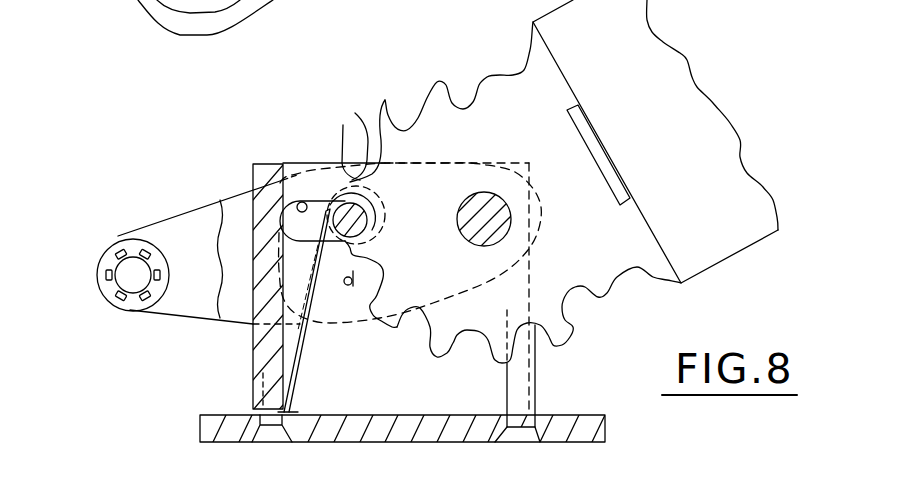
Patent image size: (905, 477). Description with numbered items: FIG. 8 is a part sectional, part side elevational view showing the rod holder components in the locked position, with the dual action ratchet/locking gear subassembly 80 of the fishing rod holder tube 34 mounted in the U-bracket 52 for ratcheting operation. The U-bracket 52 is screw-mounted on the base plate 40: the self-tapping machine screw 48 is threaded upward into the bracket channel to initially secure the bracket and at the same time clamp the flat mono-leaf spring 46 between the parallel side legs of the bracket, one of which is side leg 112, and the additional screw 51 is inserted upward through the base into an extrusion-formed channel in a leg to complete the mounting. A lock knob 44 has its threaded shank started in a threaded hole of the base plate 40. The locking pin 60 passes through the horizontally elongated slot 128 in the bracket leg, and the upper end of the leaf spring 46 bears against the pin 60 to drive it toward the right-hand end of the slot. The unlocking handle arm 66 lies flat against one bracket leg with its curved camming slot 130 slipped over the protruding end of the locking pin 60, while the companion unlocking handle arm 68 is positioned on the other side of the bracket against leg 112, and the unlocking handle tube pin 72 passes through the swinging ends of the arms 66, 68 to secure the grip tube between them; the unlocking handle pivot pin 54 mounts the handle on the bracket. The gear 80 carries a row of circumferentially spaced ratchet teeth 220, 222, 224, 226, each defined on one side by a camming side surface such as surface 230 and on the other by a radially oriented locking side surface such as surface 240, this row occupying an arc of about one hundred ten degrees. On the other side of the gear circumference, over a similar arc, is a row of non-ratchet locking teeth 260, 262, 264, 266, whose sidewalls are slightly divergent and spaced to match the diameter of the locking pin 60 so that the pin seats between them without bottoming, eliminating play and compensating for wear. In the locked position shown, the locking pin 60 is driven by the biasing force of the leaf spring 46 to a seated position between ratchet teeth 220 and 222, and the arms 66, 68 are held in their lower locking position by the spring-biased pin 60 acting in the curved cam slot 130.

The fishing rod holder tube 34 is at (685, 59).
The base plate 40 is at (196, 426).
The lock knob 44 is at (179, 17).
The flat mono-leaf spring 46 is at (296, 380).
The U-bracket mounting screw 48 is at (270, 438).
The U-bracket mounting screw 51 is at (523, 440).
The U-bracket 52 is at (252, 363).
The unlocking handle pivot pin 54 is at (485, 196).
The locking pin 60 is at (367, 226).
The unlocking handle arm 66 is at (164, 224).
The unlocking handle arm 68 is at (235, 199).
The unlocking handle tube pin 72 is at (121, 268).
The dual action ratchet/locking gear subassembly 80 is at (514, 76).
The side leg of bracket 112 is at (402, 394).
The horizontally elongated slot 128 is at (391, 269).
The curved camming slot 130 is at (356, 279).
The ratchet tooth 220 is at (352, 243).
The ratchet tooth 222 is at (330, 141).
The ratchet tooth 224 is at (390, 116).
The ratchet tooth 226 is at (440, 80).
The tooth camming side surface 230 is at (356, 198).
The locking side surface 240 is at (345, 126).
The non-ratchet locking tooth 260 is at (376, 326).
The non-ratchet locking tooth 262 is at (437, 362).
The non-ratchet locking tooth 264 is at (510, 364).
The non-ratchet locking tooth 266 is at (575, 328).